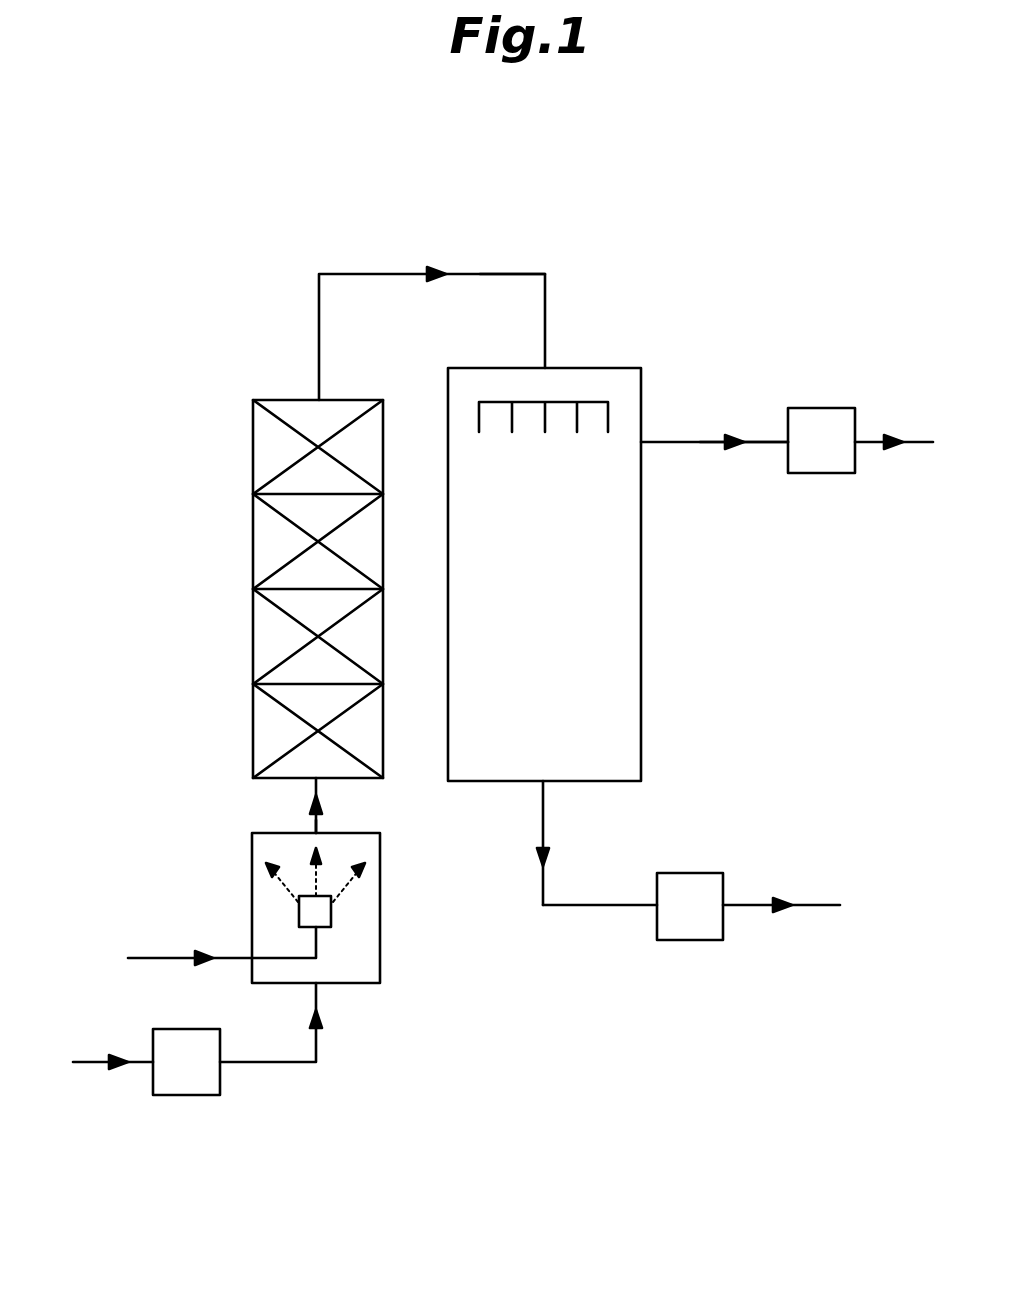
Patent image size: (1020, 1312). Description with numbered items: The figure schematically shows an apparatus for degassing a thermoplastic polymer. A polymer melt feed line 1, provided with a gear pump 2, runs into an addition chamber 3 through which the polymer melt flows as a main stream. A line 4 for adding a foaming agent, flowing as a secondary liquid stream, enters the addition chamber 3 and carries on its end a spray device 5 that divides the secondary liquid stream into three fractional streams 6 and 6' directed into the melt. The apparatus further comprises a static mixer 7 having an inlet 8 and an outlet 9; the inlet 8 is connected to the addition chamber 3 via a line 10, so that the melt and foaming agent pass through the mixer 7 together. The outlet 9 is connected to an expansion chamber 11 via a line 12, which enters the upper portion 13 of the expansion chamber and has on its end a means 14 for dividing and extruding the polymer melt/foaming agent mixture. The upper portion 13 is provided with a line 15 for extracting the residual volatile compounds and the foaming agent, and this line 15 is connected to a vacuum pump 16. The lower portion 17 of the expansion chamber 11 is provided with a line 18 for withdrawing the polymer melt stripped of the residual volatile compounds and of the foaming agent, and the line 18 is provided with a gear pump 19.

The polymer melt feed line 1 is at (268, 1062).
The gear pump 2 is at (183, 1095).
The addition chamber 3 is at (347, 983).
The line for adding a foaming agent 4 is at (170, 958).
The spray device 5 is at (323, 928).
The fractional streams 6 is at (312, 898).
The fractional stream 6' is at (371, 865).
The static mixer 7 is at (253, 610).
The inlet 8 is at (342, 780).
The outlet 9 is at (290, 400).
The line 10 is at (313, 823).
The expansion chamber 11 is at (641, 622).
The line 12 is at (478, 274).
The upper portion of the expansion chamber 13 is at (641, 405).
The means for dividing and extruding 14 is at (560, 402).
The line for extracting residual volatile compounds and foaming agent 15 is at (763, 442).
The vacuum pump 16 is at (827, 473).
The lower portion of the expansion chamber 17 is at (641, 740).
The line for withdrawing the polymer melt 18 is at (608, 905).
The gear pump 19 is at (687, 940).